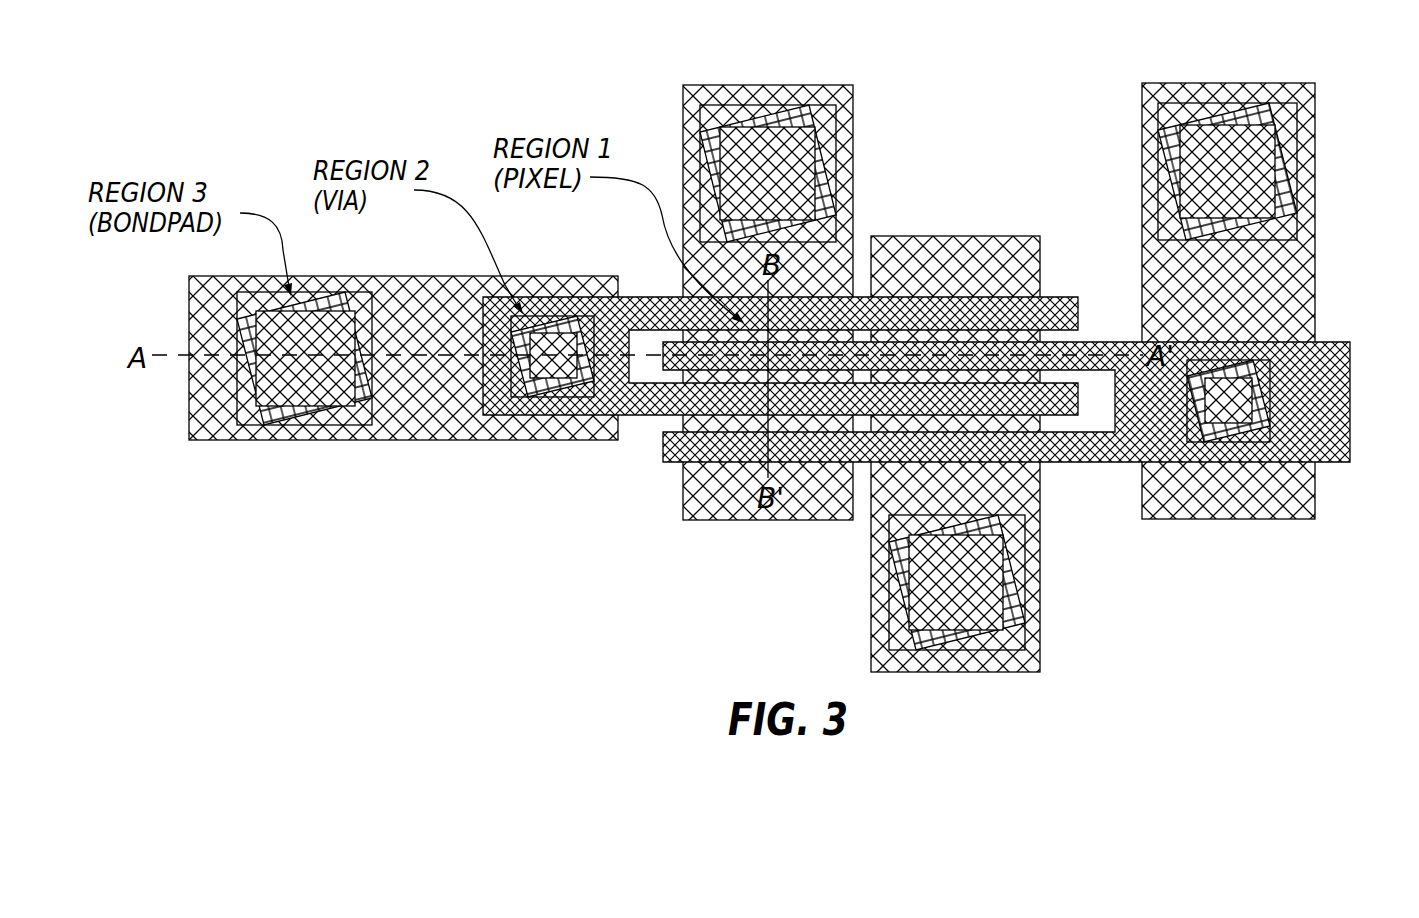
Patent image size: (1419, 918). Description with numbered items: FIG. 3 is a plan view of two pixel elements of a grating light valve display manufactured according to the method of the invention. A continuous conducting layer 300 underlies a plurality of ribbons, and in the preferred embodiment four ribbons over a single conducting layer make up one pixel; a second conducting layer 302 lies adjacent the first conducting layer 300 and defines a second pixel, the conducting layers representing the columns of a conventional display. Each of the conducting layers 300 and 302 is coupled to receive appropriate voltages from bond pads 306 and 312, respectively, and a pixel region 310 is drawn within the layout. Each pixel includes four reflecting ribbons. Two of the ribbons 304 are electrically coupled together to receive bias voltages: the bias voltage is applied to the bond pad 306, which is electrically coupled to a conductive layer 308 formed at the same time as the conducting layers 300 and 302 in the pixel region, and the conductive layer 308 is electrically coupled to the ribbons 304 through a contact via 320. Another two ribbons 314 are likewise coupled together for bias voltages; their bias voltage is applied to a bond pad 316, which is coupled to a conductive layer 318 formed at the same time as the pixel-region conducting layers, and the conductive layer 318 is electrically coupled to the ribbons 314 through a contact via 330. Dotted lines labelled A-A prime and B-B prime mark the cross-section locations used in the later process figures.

The continuous conducting layer 300 is at (732, 510).
The second conducting layer 302 is at (998, 256).
The ribbons 304 is at (662, 306).
The bond pad 306 is at (320, 403).
The conductive layer 308 is at (343, 432).
The pixel 310 is at (790, 142).
The bond pad 312 is at (993, 597).
The ribbons 314 is at (1090, 349).
The bond pad 316 is at (1207, 130).
The conductive layer 318 is at (1297, 262).
The contact via 320 is at (543, 373).
The contact via 330 is at (1260, 428).